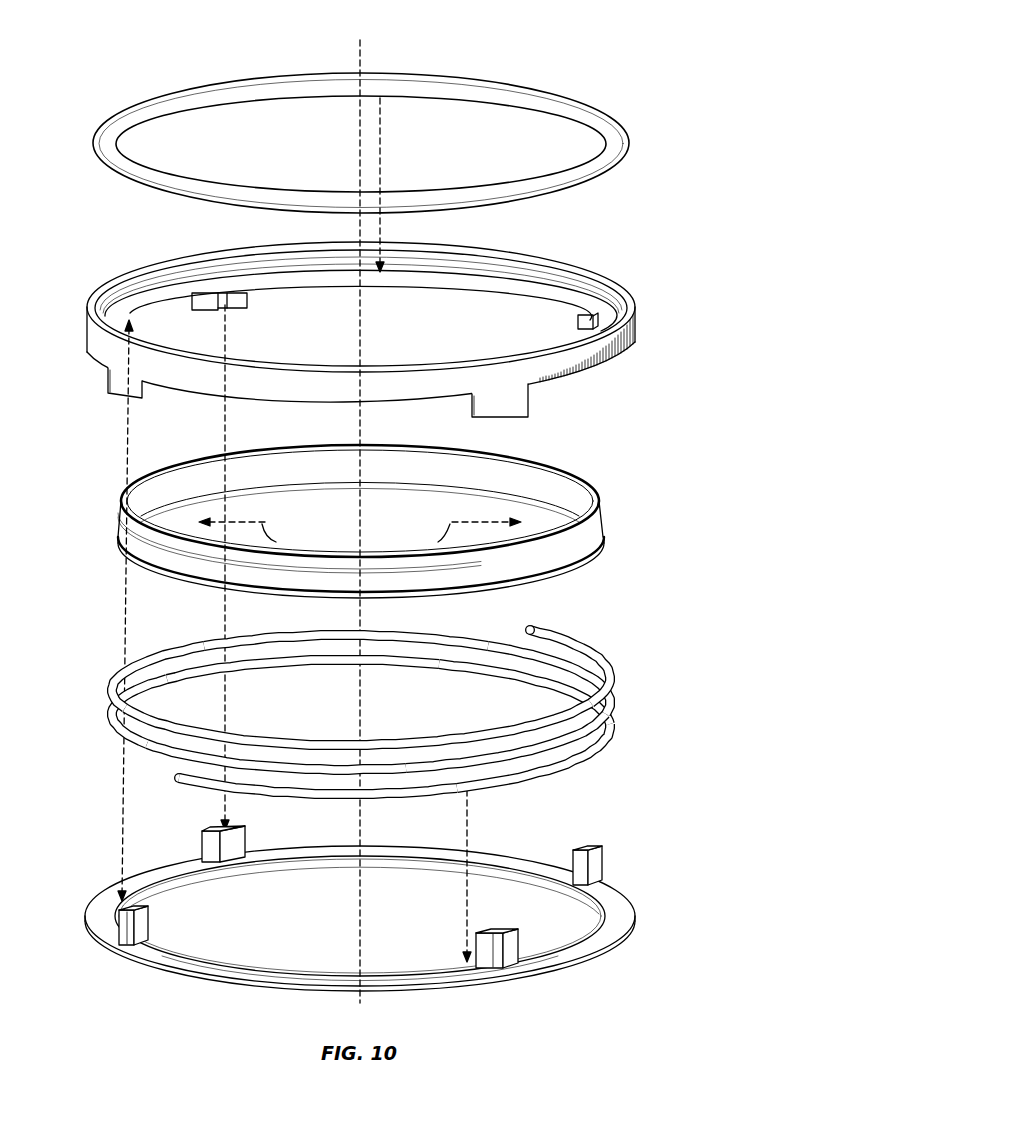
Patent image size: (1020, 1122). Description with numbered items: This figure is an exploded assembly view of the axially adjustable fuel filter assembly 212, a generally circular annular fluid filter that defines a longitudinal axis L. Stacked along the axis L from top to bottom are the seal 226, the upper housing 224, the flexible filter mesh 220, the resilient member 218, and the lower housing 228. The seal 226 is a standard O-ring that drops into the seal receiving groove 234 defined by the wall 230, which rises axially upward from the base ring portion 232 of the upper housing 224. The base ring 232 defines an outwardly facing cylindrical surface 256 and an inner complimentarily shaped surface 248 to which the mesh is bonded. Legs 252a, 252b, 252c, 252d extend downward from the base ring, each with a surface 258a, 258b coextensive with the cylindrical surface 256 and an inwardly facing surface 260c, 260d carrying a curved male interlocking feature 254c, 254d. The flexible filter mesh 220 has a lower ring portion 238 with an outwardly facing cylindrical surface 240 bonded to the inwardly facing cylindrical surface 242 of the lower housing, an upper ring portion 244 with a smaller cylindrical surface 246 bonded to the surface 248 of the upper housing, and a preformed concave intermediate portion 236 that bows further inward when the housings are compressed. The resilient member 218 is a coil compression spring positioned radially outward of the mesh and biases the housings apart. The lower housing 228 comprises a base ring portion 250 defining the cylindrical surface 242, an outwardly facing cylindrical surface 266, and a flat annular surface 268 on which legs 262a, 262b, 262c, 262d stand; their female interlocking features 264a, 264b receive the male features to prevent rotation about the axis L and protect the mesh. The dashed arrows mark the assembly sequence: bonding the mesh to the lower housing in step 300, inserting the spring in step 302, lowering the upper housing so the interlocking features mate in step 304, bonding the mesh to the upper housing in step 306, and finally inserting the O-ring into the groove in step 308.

The axially adjustable fuel filter assembly 212 is at (610, 56).
The resilient member 218 is at (587, 764).
The flexible filter mesh 220 is at (342, 525).
The upper housing 224 is at (608, 369).
The seal 226 is at (606, 187).
The lower housing 228 is at (362, 927).
The wall 230 is at (386, 337).
The base ring portion 232 is at (545, 388).
The seal receiving groove 234 is at (548, 268).
The preformed concave intermediate portion 236 is at (603, 542).
The lower ring portion 238 is at (312, 567).
The cylindrical surface 240 is at (118, 548).
The cylindrical surface 242 is at (180, 872).
The upper ring portion 244 is at (309, 501).
The smaller cylindrical surface 246 is at (120, 502).
The complimentarily shaped surface 248 is at (170, 308).
The base ring portion 250 is at (436, 990).
The leg 252a is at (125, 385).
The leg 252b is at (503, 406).
The leg 252c is at (578, 320).
The leg 252d is at (248, 300).
The interlocking feature 254c is at (582, 326).
The interlocking feature 254d is at (226, 305).
The cylindrical surface 256 is at (386, 337).
The surface 258a is at (112, 375).
The surface 258b is at (483, 400).
The surface 260c is at (571, 294).
The surface 260d is at (237, 289).
The leg 262a is at (95, 948).
The leg 262b is at (537, 971).
The leg 262c is at (605, 870).
The leg 262d is at (232, 852).
The interlocking feature 264a is at (118, 930).
The interlocking feature 264b is at (500, 970).
The cylindrical surface 266 is at (232, 990).
The flat annular surface 268 is at (264, 965).
The step 300 is at (123, 608).
The step 302 is at (465, 895).
The step 304 is at (222, 608).
The step 306 is at (128, 428).
The step 308 is at (383, 138).
The longitudinal axis L is at (362, 1008).